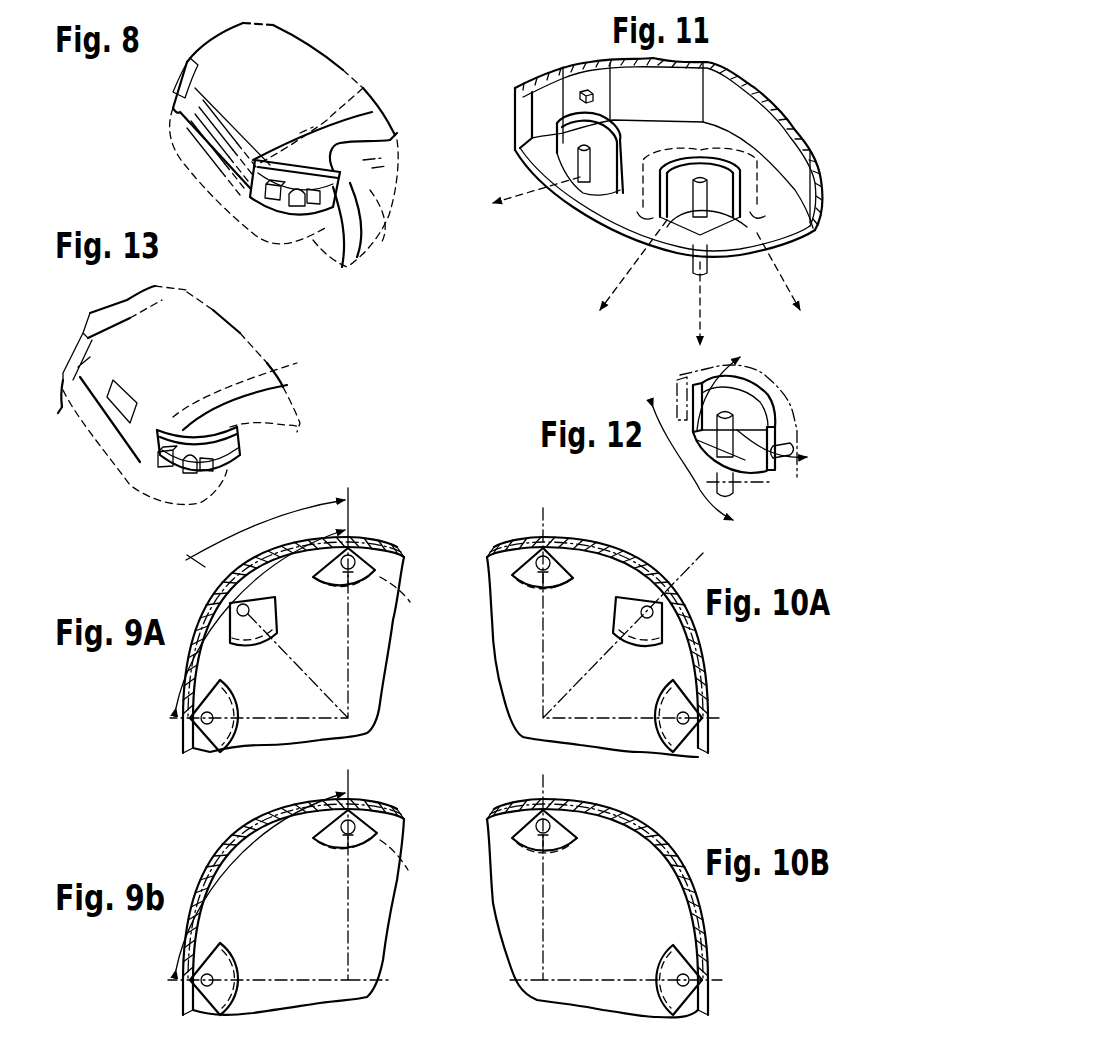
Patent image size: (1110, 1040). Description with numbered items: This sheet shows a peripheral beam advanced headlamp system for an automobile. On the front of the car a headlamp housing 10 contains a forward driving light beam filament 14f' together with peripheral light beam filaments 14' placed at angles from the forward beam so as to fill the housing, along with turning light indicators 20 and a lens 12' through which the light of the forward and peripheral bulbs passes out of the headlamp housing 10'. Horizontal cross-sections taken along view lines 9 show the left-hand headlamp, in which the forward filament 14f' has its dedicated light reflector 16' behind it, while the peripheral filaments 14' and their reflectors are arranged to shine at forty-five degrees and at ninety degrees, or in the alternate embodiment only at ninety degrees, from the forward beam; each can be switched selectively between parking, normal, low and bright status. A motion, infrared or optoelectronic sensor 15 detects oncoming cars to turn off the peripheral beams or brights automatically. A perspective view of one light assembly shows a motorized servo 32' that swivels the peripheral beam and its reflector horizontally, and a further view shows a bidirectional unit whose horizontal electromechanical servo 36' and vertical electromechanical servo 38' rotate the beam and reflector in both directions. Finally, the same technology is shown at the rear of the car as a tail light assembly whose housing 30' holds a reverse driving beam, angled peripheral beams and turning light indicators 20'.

In FIG. 8, the headlamp housing 10 is at (276, 134).
In FIG. 8, the view lines 9- 9 is at (262, 157).
In FIG. 8, the sensor 15 is at (367, 87).
In FIG. 13, the sensor 15 is at (297, 364).
In FIG. 11, the sensor 15 is at (580, 93).
In FIG. 9A, the sensor 15 is at (407, 605).
In FIG. 9B, the sensor 15 is at (407, 866).
In FIG. 10A, the sensor 15 is at (520, 557).
In FIG. 10B, the sensor 15 is at (520, 823).
In FIG. 8, the turning light indicators 20 is at (363, 192).
In FIG. 8, the headlamp housing 10' is at (229, 172).
In FIG. 12, the headlamp housing 10' is at (730, 438).
In FIG. 8, the lens 12' is at (201, 155).
In FIG. 13, the lens 12' is at (166, 496).
In FIG. 9A, the lens 12' is at (267, 613).
In FIG. 9B, the lens 12' is at (266, 884).
In FIG. 8, the forward driving light beam filament 14f' is at (242, 211).
In FIG. 13, the forward driving light beam filament 14f' is at (138, 484).
In FIG. 11, the forward driving light beam filament 14f' is at (558, 178).
In FIG. 9A, the forward driving light beam filament 14f' is at (375, 567).
In FIG. 9B, the forward driving light beam filament 14f' is at (378, 829).
In FIG. 8, the peripheral light beam filaments 14' is at (299, 235).
In FIG. 13, the peripheral light beam filaments 14' is at (196, 500).
In FIG. 11, the peripheral light beam filaments 14' is at (700, 251).
In FIG. 12, the peripheral light beam filaments 14' is at (746, 396).
In FIG. 9A, the peripheral light beam filaments 14' is at (233, 688).
In FIG. 9B, the peripheral light beam filaments 14' is at (194, 973).
In FIG. 13, the headlamp housing 30' is at (167, 395).
In FIG. 13, the turning light indicators 20' is at (217, 457).
In FIG. 11, the light reflector 16' is at (685, 214).
In FIG. 12, the light reflector 16' is at (778, 374).
In FIG. 9A, the light reflector 16' is at (293, 664).
In FIG. 9B, the light reflector 16' is at (296, 927).
In FIG. 11, the servo 32' is at (679, 264).
In FIG. 12, the vertical electromechanical servo 38' is at (793, 415).
In FIG. 12, the horizontal electromechanical servo 36' is at (747, 514).